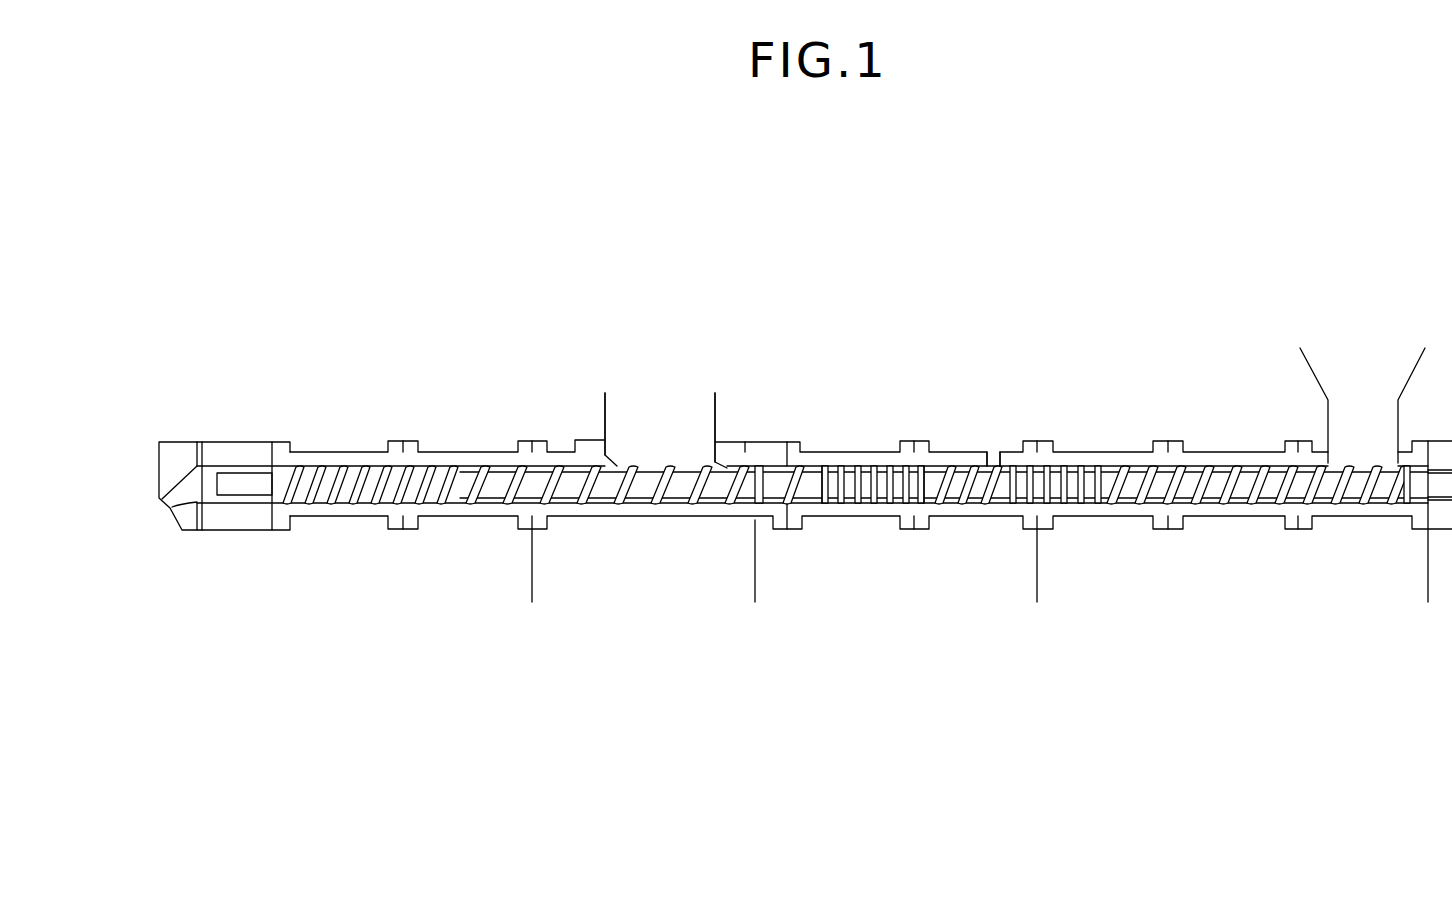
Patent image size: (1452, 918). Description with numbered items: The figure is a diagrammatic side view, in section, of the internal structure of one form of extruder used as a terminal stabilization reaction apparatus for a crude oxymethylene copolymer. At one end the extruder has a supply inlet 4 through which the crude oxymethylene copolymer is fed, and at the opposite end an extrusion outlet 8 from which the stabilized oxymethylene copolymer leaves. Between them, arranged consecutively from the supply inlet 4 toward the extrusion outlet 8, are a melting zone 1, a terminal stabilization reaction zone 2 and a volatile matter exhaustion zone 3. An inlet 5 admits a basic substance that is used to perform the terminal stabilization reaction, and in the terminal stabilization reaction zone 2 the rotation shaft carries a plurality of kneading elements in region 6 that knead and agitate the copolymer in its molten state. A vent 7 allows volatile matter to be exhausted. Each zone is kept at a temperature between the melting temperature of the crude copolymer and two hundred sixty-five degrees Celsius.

The melting zone 1 is at (1419, 581).
The terminal stabilization reaction zone 2 is at (1028, 581).
The volatile matter exhaustion zone 3 is at (746, 581).
The supply inlet 4 is at (1362, 399).
The inlet for a basic substance 5 is at (993, 460).
The region of kneading elements 6 is at (924, 413).
The vent 7 is at (660, 416).
The extrusion outlet 8 is at (173, 498).